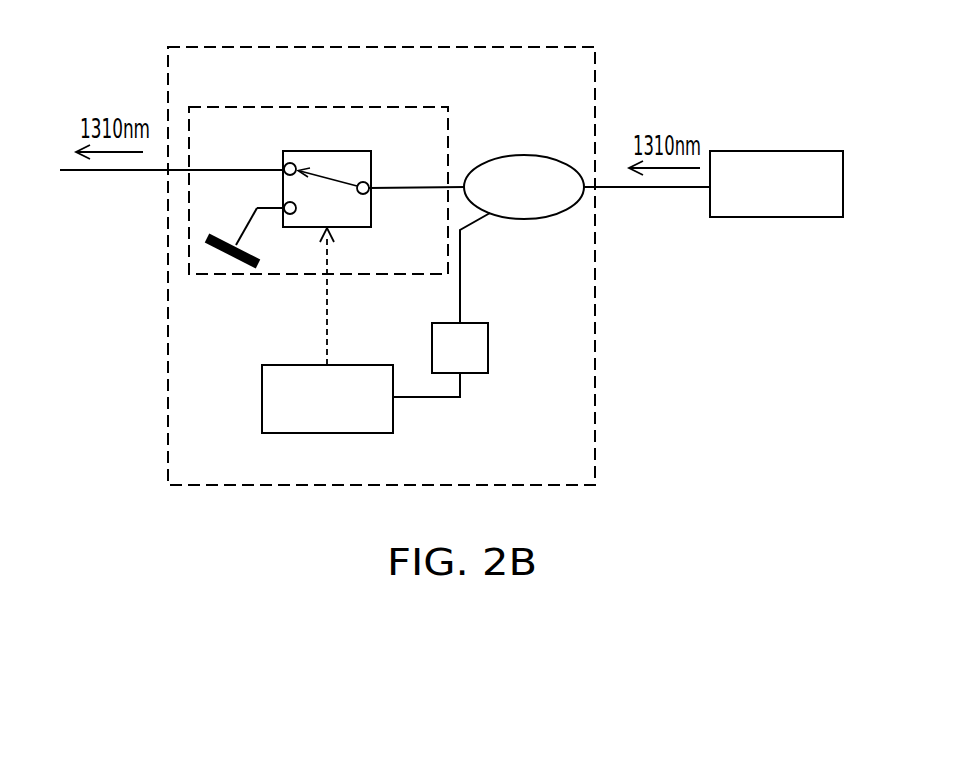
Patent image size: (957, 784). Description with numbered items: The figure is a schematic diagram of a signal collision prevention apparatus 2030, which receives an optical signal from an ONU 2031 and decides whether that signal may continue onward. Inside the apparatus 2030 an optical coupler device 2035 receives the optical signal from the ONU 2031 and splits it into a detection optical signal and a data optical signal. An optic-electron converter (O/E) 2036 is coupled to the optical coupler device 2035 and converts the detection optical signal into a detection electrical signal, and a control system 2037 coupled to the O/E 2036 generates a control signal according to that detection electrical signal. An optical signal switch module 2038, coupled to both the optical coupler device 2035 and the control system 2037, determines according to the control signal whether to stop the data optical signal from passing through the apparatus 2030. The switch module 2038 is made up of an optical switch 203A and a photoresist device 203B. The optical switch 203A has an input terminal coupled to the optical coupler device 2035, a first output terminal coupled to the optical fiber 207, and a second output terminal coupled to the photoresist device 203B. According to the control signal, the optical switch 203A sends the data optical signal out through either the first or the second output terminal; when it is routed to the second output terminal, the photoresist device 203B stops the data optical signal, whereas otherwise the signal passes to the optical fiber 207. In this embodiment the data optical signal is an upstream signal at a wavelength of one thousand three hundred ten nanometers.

The signal collision prevention apparatus 2030 is at (535, 47).
The optical signal switch module 2038 is at (390, 107).
The optical switch 203A is at (357, 151).
The photoresist device 203B is at (224, 238).
The optical fiber 207 is at (118, 172).
The optical coupler device 2035 is at (525, 154).
The ONU 2031 is at (775, 151).
The optic-electron converter (O/E) 2036 is at (489, 347).
The control system 2037 is at (313, 434).